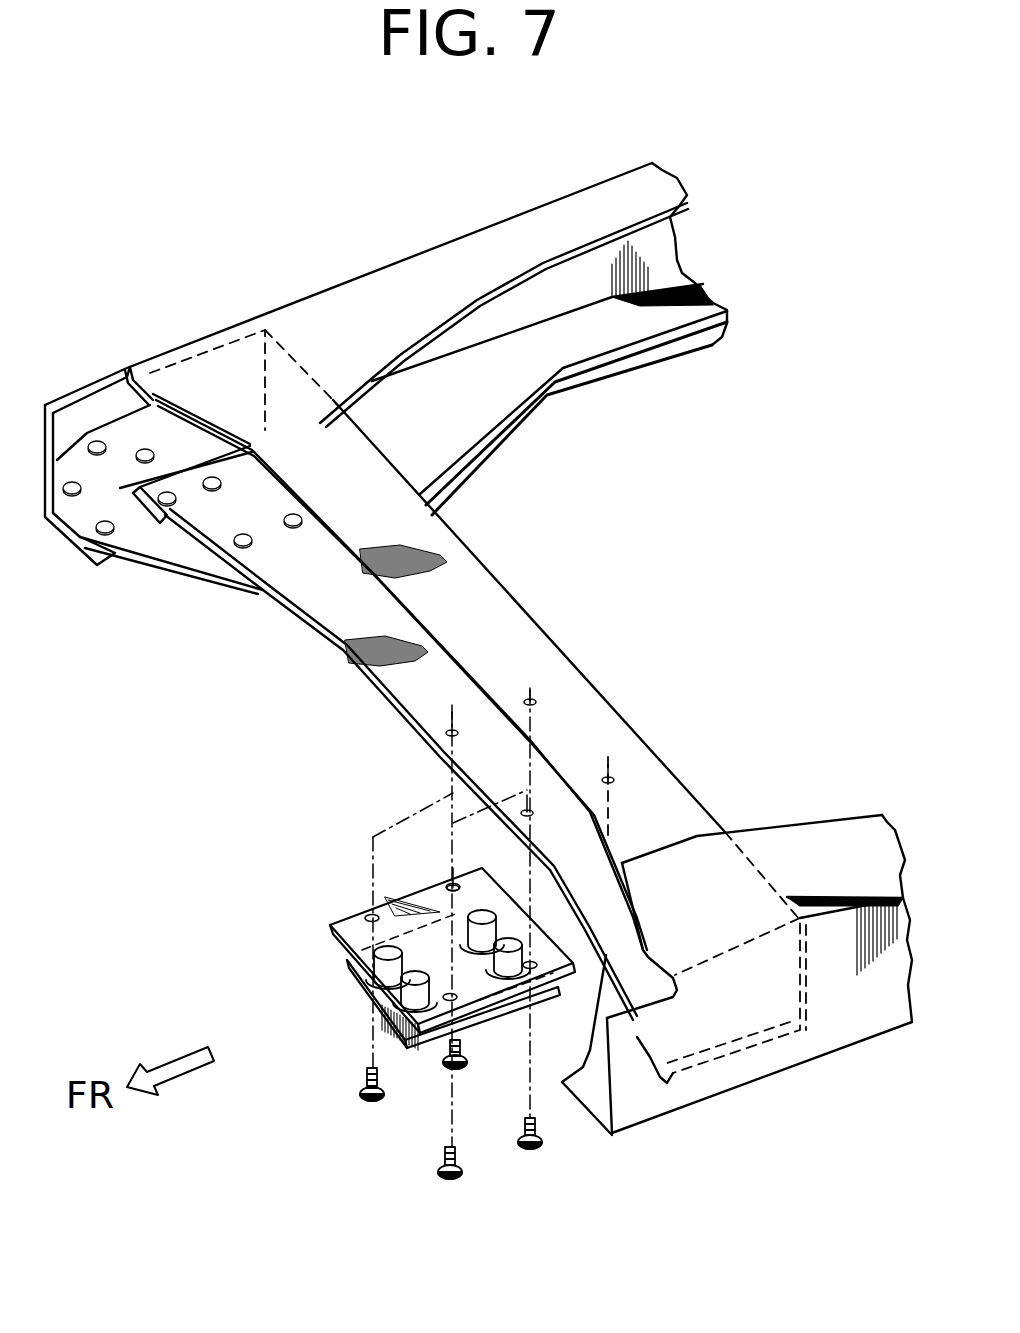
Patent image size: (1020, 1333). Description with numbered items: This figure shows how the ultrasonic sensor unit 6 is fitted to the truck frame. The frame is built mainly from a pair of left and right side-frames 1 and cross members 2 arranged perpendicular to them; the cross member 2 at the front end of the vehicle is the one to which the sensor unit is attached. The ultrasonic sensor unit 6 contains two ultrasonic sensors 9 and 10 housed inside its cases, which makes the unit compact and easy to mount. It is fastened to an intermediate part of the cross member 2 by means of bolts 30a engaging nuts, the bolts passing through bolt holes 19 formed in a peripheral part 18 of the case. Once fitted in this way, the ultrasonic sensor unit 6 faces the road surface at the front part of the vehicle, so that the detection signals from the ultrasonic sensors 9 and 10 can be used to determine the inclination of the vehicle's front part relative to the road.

The side-frame 1 is at (365, 295).
The cross member 2 is at (463, 580).
The ultrasonic sensor unit 6 is at (353, 1017).
The ultrasonic sensor 9 is at (372, 1000).
The ultrasonic sensor 10 is at (497, 990).
The peripheral part 18 is at (330, 925).
The bolt hole 19 is at (372, 912).
The bolt 30a is at (440, 1170).